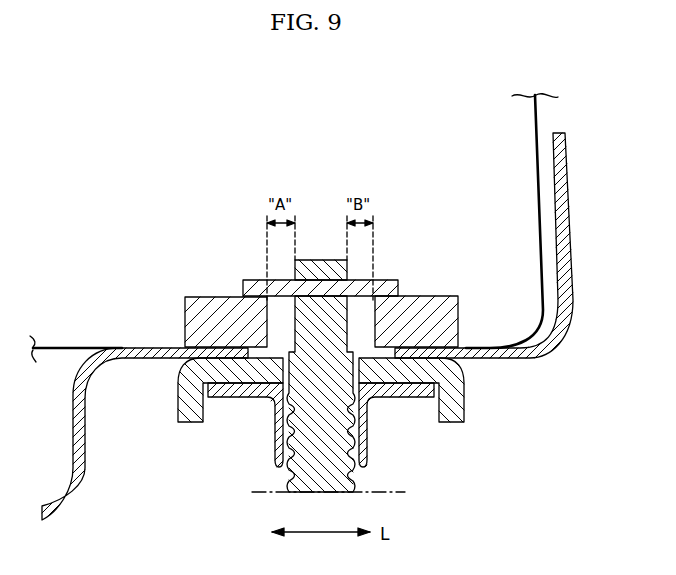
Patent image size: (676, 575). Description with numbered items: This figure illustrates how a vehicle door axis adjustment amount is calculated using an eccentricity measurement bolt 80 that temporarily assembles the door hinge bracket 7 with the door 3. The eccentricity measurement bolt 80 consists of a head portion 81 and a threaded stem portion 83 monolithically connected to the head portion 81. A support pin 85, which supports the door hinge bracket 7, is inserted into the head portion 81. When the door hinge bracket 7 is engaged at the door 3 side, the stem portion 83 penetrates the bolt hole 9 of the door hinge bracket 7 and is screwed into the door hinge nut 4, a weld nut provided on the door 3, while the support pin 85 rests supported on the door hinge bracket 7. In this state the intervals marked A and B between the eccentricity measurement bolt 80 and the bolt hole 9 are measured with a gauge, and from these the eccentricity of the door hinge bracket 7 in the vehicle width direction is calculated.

The door 3 is at (147, 347).
The door hinge nut 4 is at (272, 405).
The door hinge bracket 7 is at (452, 296).
The bolt hole 9 is at (383, 333).
The eccentricity measurement bolt 80 is at (360, 265).
The head portion 81 is at (300, 325).
The stem portion 83 is at (352, 472).
The support pin 85 is at (398, 282).